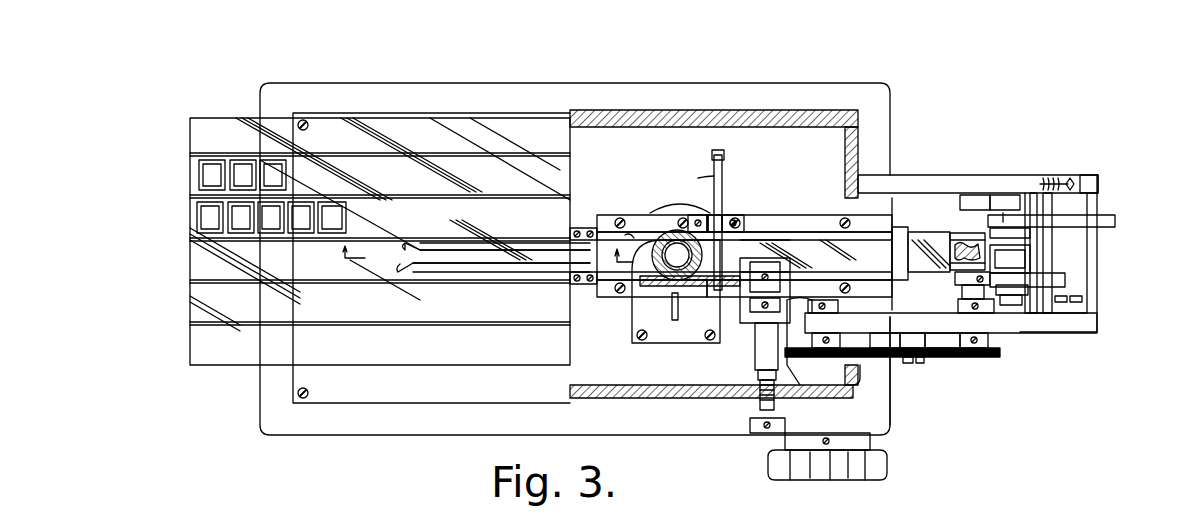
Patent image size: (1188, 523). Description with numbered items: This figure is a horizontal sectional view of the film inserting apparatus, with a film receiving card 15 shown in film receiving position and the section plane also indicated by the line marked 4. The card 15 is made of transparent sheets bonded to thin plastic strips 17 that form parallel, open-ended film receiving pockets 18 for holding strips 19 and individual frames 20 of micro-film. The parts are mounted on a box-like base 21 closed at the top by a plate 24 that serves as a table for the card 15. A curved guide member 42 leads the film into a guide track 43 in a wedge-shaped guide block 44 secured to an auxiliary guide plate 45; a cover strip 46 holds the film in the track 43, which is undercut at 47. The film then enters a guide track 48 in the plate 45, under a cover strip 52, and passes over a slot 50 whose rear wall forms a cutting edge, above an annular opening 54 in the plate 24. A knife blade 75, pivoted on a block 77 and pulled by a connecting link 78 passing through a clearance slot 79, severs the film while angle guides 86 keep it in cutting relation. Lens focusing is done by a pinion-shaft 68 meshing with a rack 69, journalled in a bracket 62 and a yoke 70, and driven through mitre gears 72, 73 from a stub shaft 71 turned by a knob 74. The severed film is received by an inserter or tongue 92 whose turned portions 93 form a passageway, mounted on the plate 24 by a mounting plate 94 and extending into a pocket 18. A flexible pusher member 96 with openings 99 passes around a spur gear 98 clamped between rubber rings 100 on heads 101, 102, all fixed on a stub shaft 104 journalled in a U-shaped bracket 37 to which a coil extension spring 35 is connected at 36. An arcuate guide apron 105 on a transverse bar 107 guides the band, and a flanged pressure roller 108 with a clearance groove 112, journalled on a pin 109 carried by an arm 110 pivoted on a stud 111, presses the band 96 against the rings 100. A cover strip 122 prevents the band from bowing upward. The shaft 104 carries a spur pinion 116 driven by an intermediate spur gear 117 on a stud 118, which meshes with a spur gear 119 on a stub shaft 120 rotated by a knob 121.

The section line 4 is at (481, 260).
The card-like pocket type film holder 15 is at (190, 116).
The plastic strips 17 is at (236, 118).
The film receiving pockets 18 is at (406, 124).
The strips of photographic micro-film 19 is at (286, 172).
The individual frames of micro-film 20 is at (346, 214).
The base 21 is at (750, 85).
The plate 24 is at (497, 378).
The coil extension spring 35 is at (1058, 178).
The connection of spring to bracket 36 is at (1074, 178).
The U-shaped bracket 37 is at (1092, 180).
The curved guide member 42 is at (915, 232).
The guide track 43 is at (760, 230).
The wedge-shaped guide block 44 is at (792, 220).
The auxiliary guide plate 45 is at (606, 215).
The cover strip 46 is at (808, 215).
The undercut 47 is at (830, 230).
The undercut guide groove or track 48 is at (634, 232).
The transversely extending slot 50 is at (712, 215).
The cover strip 52 is at (610, 287).
The annular opening 54 is at (660, 210).
The bracket 62 is at (632, 335).
The pinion-shaft 68 is at (656, 283).
The rack 69 is at (670, 290).
The yoke 70 is at (755, 325).
The stub shaft 71 is at (758, 374).
The mitre gear 72 is at (750, 306).
The mitre gear 73 is at (780, 272).
The knob 74 is at (750, 440).
The knife blade 75 is at (718, 170).
The block 77 is at (708, 293).
The connecting link 78 is at (720, 178).
The clearance slot 79 is at (698, 178).
The angle guides 86 is at (690, 215).
The inserter or tongue 92 is at (493, 272).
The upwardly and inwardly turned portions 93 is at (406, 243).
The mounting plate 94 is at (582, 228).
The pusher member 96 is at (770, 248).
The spur gear 98 is at (967, 277).
The openings 99 is at (950, 240).
The rubber rings 100 is at (975, 233).
The annular metallic head 101 is at (966, 290).
The annular metallic head 102 is at (978, 184).
The stub shaft 104 is at (966, 302).
The arcuate guide apron 105 is at (1028, 214).
The transverse bar 107 is at (1040, 300).
The flanged pressure roller 108 is at (1030, 239).
The pin 109 is at (1010, 300).
The arm 110 is at (1085, 248).
The stud 111 is at (1082, 300).
The annular clearance groove 112 is at (1030, 258).
The spur pinion 116 is at (998, 357).
The intermediate spur gear 117 is at (942, 357).
The stud 118 is at (922, 362).
The spur gear 119 is at (862, 357).
The stub shaft 120 is at (826, 380).
The knob 121 is at (888, 466).
The cover strip 122 is at (918, 280).